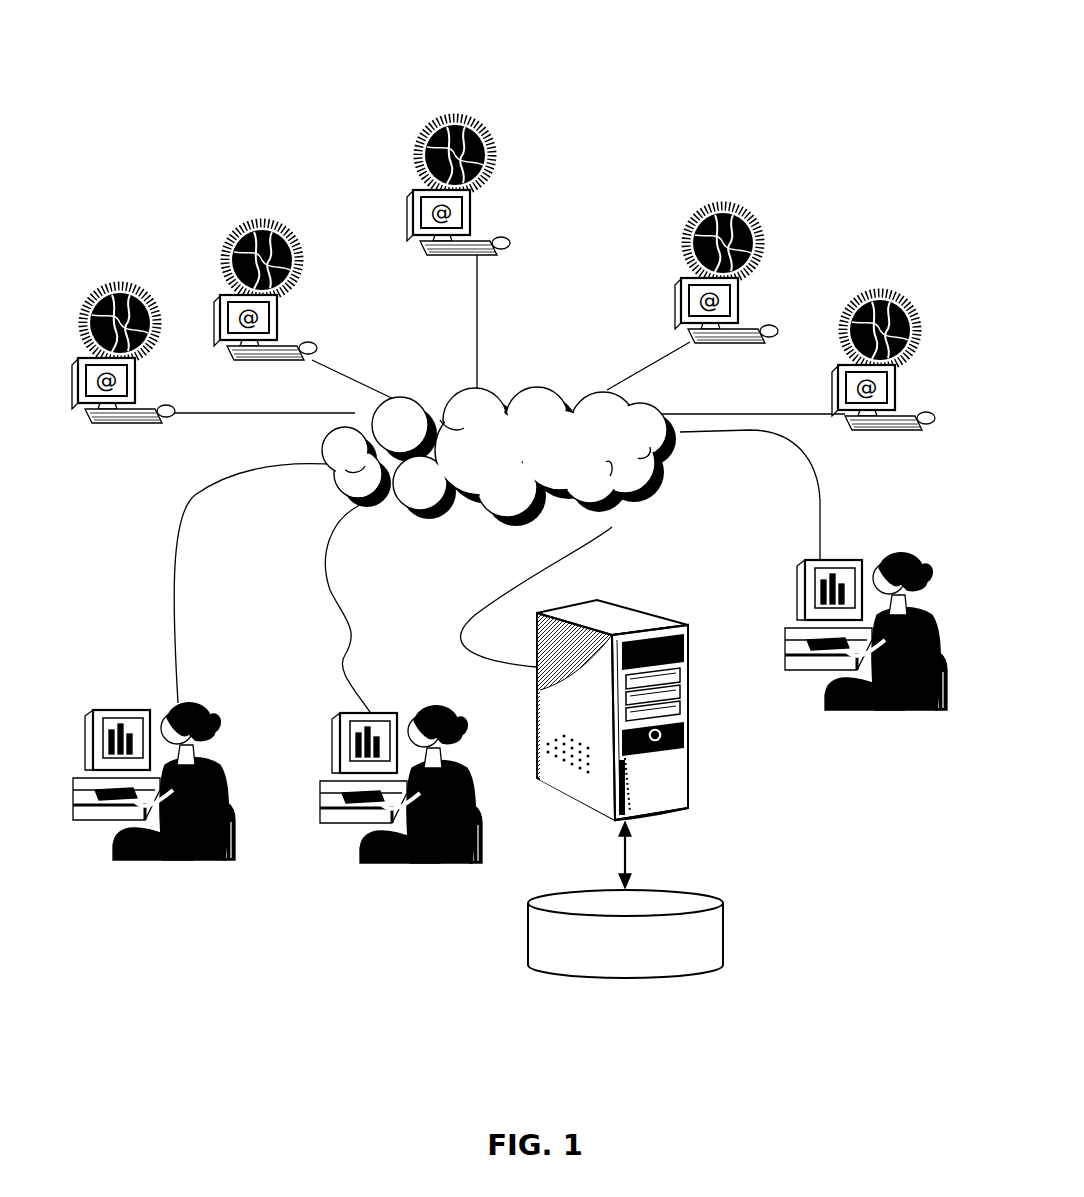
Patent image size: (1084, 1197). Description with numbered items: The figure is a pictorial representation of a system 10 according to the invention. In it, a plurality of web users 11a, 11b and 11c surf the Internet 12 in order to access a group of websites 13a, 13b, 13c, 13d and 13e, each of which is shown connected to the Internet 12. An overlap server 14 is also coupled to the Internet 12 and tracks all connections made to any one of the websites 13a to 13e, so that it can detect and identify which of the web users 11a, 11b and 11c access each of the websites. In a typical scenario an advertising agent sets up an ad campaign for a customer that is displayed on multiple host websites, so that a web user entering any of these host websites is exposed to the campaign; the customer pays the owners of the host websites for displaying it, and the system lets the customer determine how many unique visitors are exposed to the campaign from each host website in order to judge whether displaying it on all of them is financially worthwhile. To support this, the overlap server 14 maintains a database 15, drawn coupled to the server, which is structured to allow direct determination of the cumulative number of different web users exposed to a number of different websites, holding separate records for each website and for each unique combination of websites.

The system 10 is at (694, 1046).
The web user 11a is at (173, 853).
The web user 11b is at (421, 856).
The web user 11c is at (885, 705).
The Internet 12 is at (683, 477).
The website 13a is at (128, 285).
The website 13b is at (271, 218).
The website 13c is at (450, 125).
The website 13d is at (735, 203).
The website 13e is at (888, 292).
The overlap server 14 is at (688, 742).
The database 15 is at (723, 941).